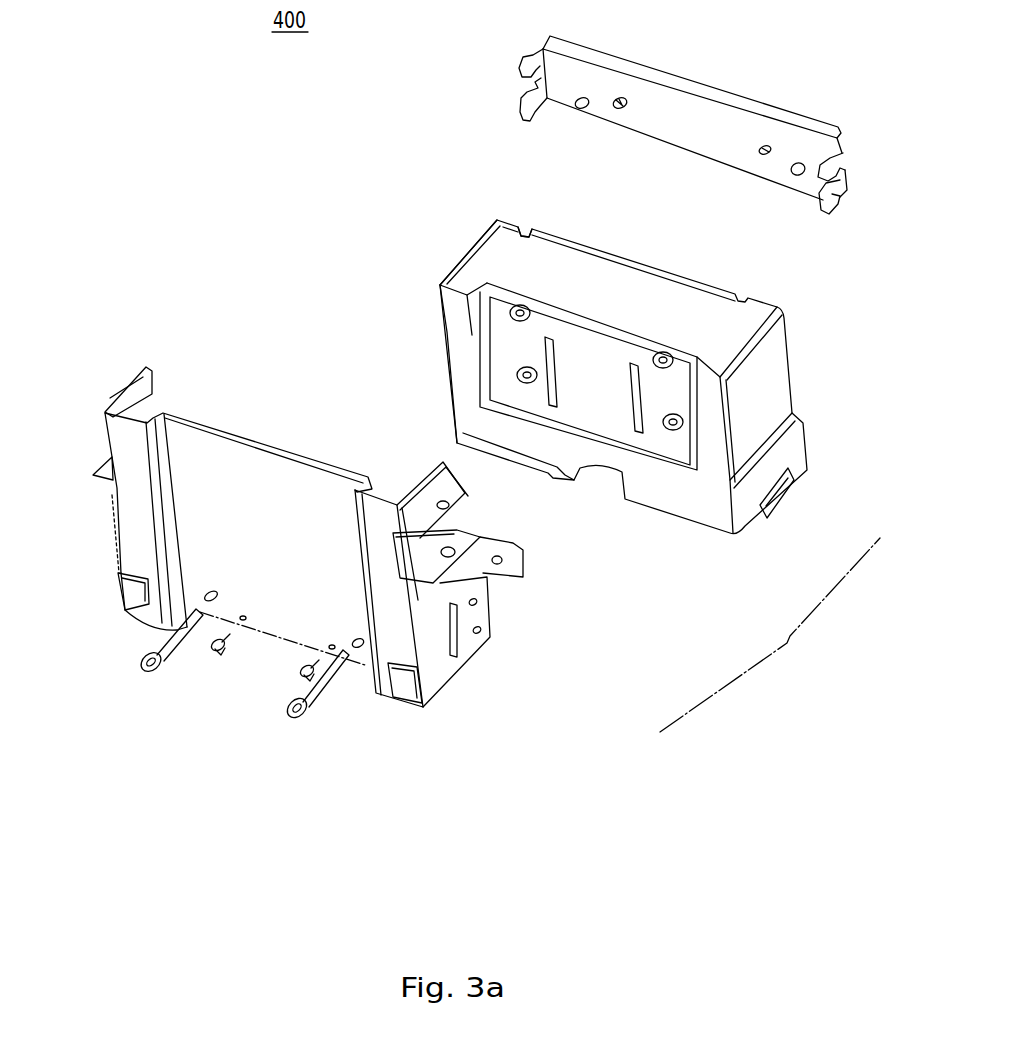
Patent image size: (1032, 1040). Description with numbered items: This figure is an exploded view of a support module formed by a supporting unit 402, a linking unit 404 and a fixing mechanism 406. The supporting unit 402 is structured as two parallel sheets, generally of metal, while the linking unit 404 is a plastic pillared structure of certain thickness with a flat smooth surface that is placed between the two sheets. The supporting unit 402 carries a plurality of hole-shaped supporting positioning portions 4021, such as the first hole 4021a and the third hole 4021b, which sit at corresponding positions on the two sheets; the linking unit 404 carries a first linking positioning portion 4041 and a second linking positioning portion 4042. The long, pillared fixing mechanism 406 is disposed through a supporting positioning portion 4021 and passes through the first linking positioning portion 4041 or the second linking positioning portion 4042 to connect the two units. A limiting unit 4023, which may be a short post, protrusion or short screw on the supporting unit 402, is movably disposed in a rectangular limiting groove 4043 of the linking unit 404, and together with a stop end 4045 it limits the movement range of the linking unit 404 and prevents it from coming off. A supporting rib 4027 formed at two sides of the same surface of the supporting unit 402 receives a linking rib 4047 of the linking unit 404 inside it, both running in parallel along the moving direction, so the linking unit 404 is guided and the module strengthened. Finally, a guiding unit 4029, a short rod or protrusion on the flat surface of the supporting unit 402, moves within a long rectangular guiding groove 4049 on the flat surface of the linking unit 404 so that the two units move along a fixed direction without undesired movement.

The supporting unit 402 is at (629, 37).
The supporting positioning portion 4021 is at (770, 635).
The first hole 4021a is at (365, 665).
The third hole 4021b is at (765, 155).
The limiting unit 4023 is at (215, 656).
The supporting rib 4027 is at (125, 442).
The guiding unit 4029 is at (577, 108).
The linking unit 404 is at (478, 214).
The first linking positioning portion 4041 is at (672, 430).
The second linking positioning portion 4042 is at (663, 352).
The limiting groove 4043 is at (545, 352).
The stop end 4045 is at (802, 455).
The linking rib 4047 is at (458, 280).
The guiding groove 4049 is at (535, 229).
The fixing mechanism 406 is at (148, 670).